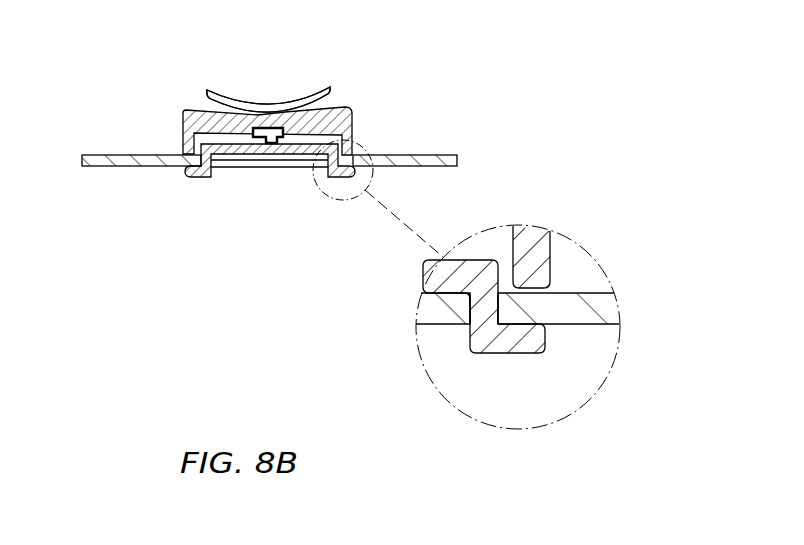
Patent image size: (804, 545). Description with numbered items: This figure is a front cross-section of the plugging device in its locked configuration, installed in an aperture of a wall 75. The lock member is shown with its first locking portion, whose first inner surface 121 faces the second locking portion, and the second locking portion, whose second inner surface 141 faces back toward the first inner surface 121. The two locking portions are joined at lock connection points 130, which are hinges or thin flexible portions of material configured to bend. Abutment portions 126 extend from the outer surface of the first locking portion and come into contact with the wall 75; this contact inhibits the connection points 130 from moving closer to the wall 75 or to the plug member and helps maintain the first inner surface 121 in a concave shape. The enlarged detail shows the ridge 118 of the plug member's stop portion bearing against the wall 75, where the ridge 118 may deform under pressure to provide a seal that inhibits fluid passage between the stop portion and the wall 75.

The first inner surface 121 is at (220, 124).
The second inner surface 141 is at (220, 124).
The lock connection point 130 is at (185, 118).
The abutment portion 126 is at (540, 232).
The ridge 118 is at (510, 323).
The wall 75 is at (580, 325).